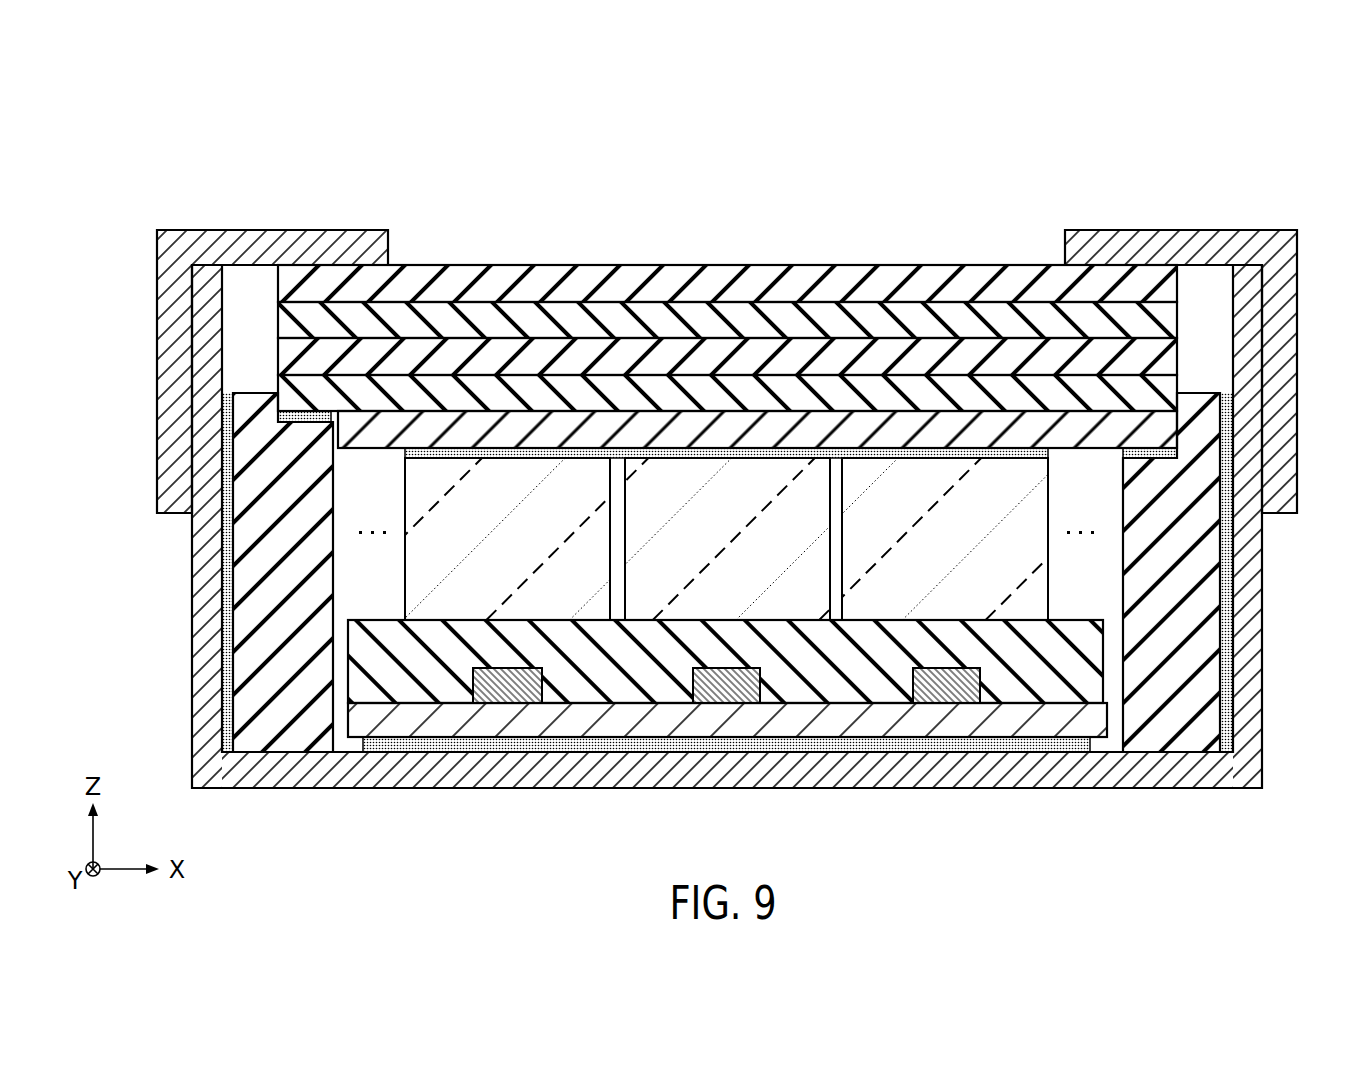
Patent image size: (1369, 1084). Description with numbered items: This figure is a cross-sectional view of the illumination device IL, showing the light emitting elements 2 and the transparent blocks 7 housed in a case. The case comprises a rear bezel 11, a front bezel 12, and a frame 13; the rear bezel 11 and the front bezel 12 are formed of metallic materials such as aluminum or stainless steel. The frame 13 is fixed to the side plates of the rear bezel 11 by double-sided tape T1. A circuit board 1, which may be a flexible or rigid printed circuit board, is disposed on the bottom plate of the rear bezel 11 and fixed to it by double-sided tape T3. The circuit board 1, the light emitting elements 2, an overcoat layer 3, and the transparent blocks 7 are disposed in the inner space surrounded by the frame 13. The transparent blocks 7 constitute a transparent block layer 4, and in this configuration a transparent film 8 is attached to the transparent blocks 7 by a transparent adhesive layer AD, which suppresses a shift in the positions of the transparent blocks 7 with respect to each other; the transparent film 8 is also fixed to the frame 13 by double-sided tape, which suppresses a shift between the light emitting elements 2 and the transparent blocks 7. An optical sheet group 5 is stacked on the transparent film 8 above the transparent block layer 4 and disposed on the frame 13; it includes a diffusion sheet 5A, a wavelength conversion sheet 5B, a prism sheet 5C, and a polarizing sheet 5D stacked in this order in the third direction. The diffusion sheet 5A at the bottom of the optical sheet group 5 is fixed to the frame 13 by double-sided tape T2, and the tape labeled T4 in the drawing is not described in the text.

The circuit board 1 is at (573, 725).
The light emitting elements 2 is at (508, 693).
The overcoat layer 3 is at (662, 678).
The transparent block layer 4 is at (1095, 564).
The optical sheet group 5 is at (727, 270).
The diffusion sheet 5A is at (355, 392).
The wavelength conversion sheet 5B is at (378, 352).
The prism sheet 5C is at (416, 317).
The polarizing sheet 5D is at (457, 282).
The transparent blocks 7 is at (450, 590).
The transparent film 8 is at (556, 428).
The rear bezel 11 is at (1262, 788).
The front bezel 12 is at (160, 231).
The frame 13 is at (297, 735).
The transparent adhesive layer AD is at (1048, 452).
The double-sided tape T1 is at (228, 625).
The double-sided tape T2 is at (291, 411).
The double-sided tape T3 is at (616, 752).
The adhesive tape T4 is at (1170, 450).
The illumination device IL is at (1172, 142).